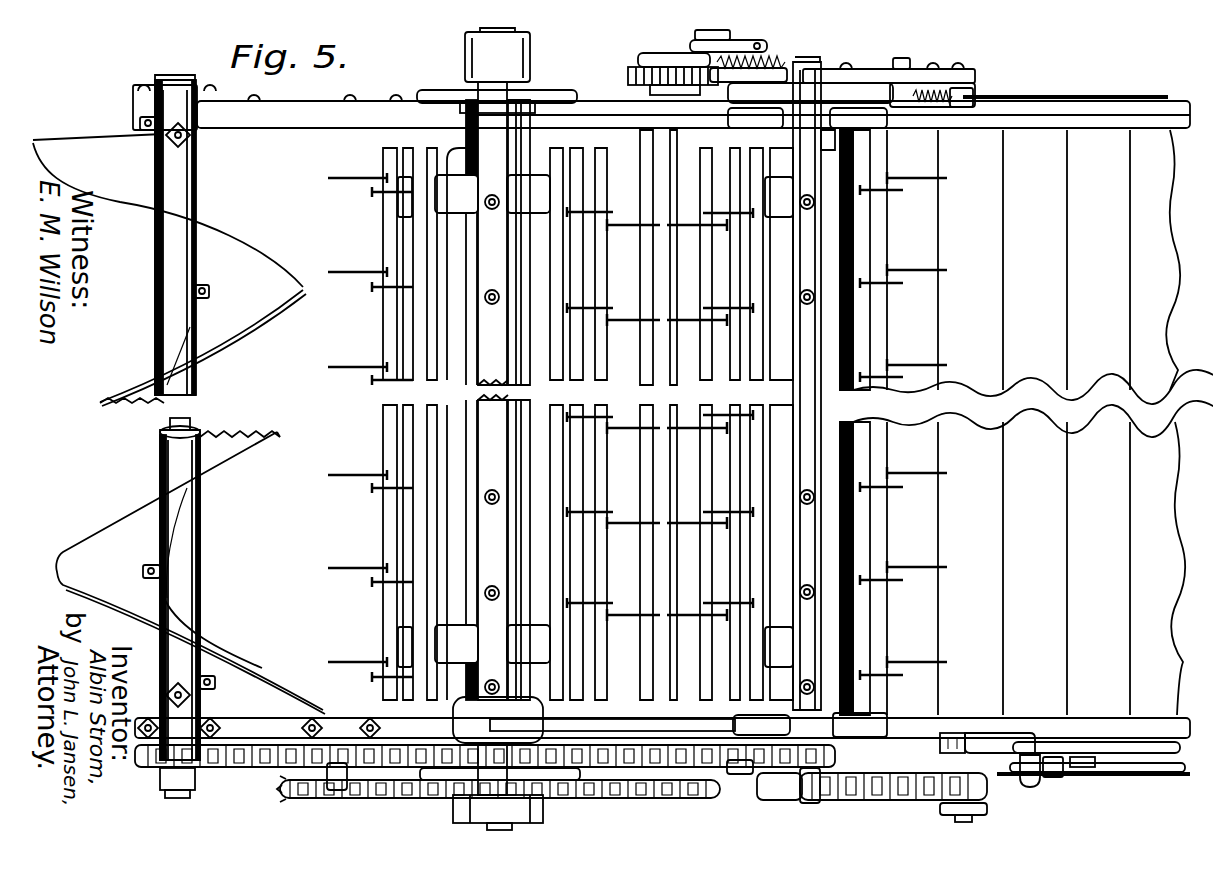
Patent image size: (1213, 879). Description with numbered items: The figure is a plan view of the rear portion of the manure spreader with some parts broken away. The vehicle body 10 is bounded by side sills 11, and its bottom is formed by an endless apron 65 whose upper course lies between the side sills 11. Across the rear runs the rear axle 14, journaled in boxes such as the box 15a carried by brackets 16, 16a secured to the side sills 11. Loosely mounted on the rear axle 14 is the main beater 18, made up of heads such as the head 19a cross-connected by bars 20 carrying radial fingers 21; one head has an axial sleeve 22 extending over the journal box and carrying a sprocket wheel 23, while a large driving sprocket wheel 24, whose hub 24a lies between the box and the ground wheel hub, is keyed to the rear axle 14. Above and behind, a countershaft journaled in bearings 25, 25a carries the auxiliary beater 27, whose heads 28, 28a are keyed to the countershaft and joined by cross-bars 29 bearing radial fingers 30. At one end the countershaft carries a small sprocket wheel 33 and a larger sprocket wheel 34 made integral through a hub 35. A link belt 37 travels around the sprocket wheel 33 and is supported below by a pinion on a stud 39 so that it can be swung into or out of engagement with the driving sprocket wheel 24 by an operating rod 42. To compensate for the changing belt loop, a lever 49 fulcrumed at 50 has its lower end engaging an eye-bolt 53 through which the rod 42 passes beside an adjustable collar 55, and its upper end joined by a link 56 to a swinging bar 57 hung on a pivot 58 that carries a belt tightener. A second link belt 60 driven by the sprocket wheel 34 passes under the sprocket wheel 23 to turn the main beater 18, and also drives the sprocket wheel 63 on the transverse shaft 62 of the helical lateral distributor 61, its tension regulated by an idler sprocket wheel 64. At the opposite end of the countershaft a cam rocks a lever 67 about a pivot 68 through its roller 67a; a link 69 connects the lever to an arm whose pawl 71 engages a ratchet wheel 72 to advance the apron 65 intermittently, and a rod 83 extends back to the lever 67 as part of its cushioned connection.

The vehicle body 10 is at (1090, 104).
The rod 83 is at (1146, 95).
The lateral distributor 61 is at (303, 290).
The rear axle 14 is at (500, 405).
The box 15a is at (530, 56).
The bracket 16a is at (568, 92).
The bars 20 is at (573, 172).
The head 19a is at (408, 212).
The main beater 18 is at (376, 444).
The radial fingers 21 is at (635, 232).
The side sills 11 is at (375, 575).
The bearing 25 is at (835, 705).
The bearing 25a is at (835, 138).
The radial fingers 30 is at (912, 212).
The head 28a is at (768, 190).
The head 28 is at (838, 655).
The cross-bars 29 is at (742, 283).
The auxiliary beater 27 is at (722, 362).
The endless apron 65 is at (1095, 395).
The ratchet wheel 72 is at (628, 74).
The pawl 71 is at (710, 75).
The link 56 is at (760, 100).
The link 69 is at (863, 70).
The pivot 68 is at (904, 64).
The lever 67 is at (972, 76).
The roller 67a is at (867, 88).
The axial sleeve 22 is at (453, 708).
The sprocket wheel 23 is at (458, 740).
The link belt 60 is at (286, 768).
The sprocket wheel 63 is at (190, 775).
The transverse shaft 62 is at (190, 796).
The idler sprocket wheel 64 is at (330, 788).
The driving sprocket wheel 24 is at (407, 798).
The bracket 16 is at (440, 780).
The hub 24a is at (520, 824).
The larger sprocket wheel 34 is at (757, 770).
The small sprocket wheel 33 is at (780, 800).
The hub 35 is at (815, 800).
The link belt 37 is at (900, 800).
The stud 39 is at (948, 812).
The pivot 58 is at (960, 733).
The swinging bar 57 is at (985, 740).
The eye-bolt 53 is at (1028, 785).
The adjustable collar 55 is at (1055, 778).
The fulcrum 50 is at (1083, 767).
The lever 49 is at (1112, 772).
The operating rod 42 is at (1180, 776).